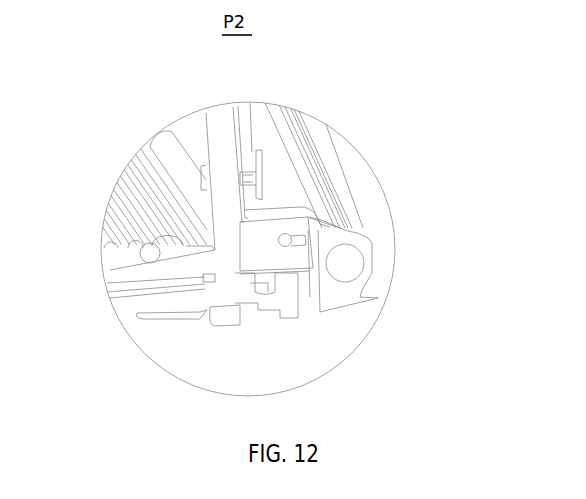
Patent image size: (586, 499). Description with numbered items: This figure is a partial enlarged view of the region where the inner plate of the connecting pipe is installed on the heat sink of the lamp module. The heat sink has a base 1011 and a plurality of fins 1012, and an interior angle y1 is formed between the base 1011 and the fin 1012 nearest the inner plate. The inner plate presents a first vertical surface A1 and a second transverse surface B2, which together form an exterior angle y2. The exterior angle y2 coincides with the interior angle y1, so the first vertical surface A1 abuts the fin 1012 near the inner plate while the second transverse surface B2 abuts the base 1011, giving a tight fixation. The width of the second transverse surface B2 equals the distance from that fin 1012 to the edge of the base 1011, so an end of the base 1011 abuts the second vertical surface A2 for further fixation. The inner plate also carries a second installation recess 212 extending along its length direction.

The fins 1012 is at (219, 122).
The first vertical surface A1 is at (244, 127).
The second transverse surface B2 is at (275, 162).
The exterior angle y2 is at (247, 217).
The interior angle y1 is at (243, 222).
The second installation recess 212 is at (345, 262).
The base 1011 is at (233, 260).
The second vertical surface A2 is at (317, 297).